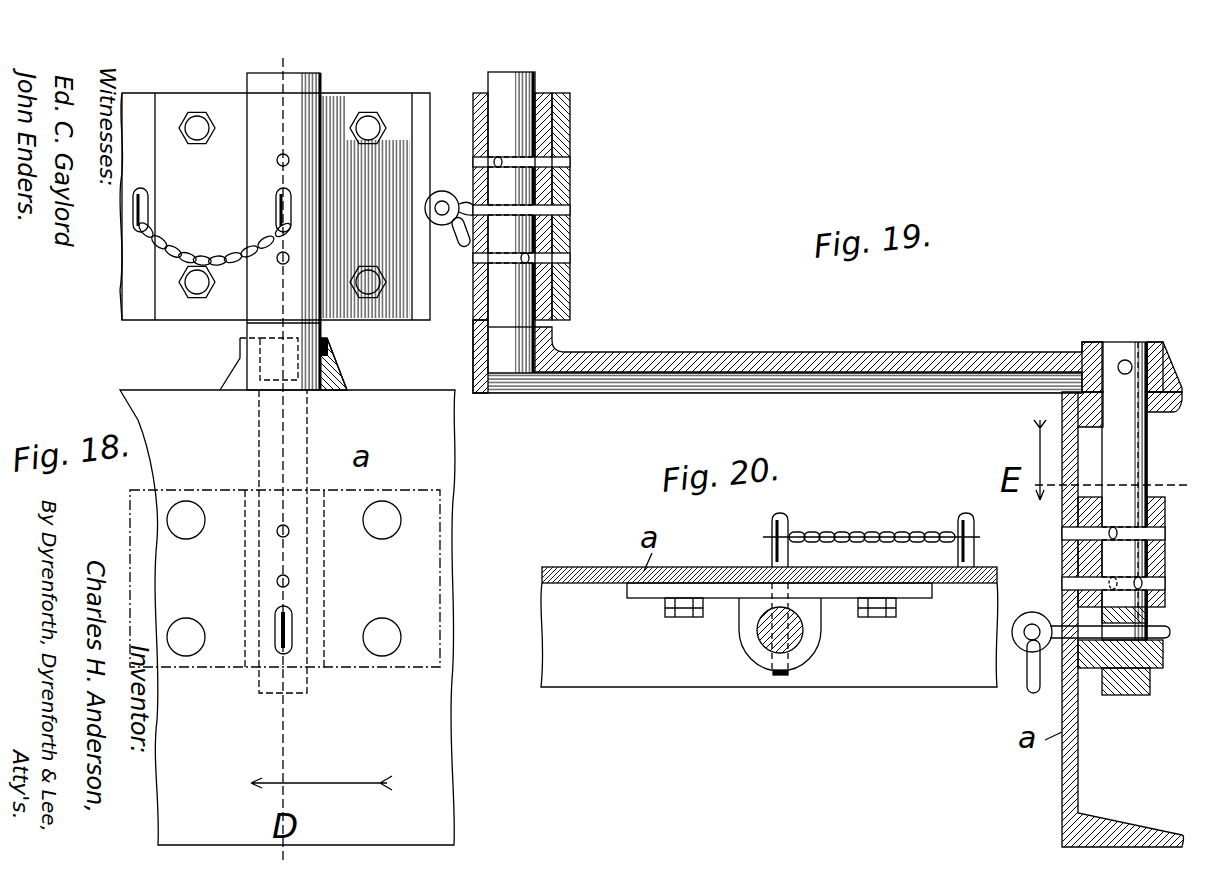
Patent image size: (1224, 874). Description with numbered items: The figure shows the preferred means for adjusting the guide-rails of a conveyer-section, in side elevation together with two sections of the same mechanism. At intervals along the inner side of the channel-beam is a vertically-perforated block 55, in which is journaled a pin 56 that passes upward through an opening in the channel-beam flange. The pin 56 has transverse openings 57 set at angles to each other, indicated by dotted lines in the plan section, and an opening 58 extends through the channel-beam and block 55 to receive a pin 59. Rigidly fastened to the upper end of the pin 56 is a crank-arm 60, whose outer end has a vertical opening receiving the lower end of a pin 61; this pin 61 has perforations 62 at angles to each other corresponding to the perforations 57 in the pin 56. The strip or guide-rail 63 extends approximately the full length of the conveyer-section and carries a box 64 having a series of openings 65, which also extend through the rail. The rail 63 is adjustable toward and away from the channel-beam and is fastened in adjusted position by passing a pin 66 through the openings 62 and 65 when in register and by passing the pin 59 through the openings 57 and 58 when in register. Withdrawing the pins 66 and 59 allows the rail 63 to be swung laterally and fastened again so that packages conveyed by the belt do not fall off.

In FIG. 19, the vertically-perforated block 55 is at (1172, 506).
In FIG. 20, the vertically-perforated block 55 is at (803, 658).
In FIG. 19, the pin 56 is at (1133, 461).
In FIG. 20, the pin 56 is at (757, 635).
In FIG. 19, the transverse opening 57 is at (1107, 613).
In FIG. 20, the transverse opening 57 is at (766, 670).
In FIG. 18, the opening 58 is at (289, 533).
In FIG. 19, the opening 58 is at (1173, 620).
In FIG. 18, the pin 59 is at (292, 624).
In FIG. 19, the pin 59 is at (1123, 696).
In FIG. 20, the pin 59 is at (793, 520).
In FIG. 18, the crank-arm 60 is at (299, 363).
In FIG. 19, the crank-arm 60 is at (872, 352).
In FIG. 19, the pin 61 is at (540, 290).
In FIG. 19, the perforation 62 is at (530, 258).
In FIG. 18, the guide-rail 63 is at (133, 308).
In FIG. 19, the guide-rail 63 is at (570, 136).
In FIG. 19, the box 64 is at (473, 106).
In FIG. 18, the opening 65 is at (289, 160).
In FIG. 19, the opening 65 is at (490, 158).
In FIG. 18, the pin 66 is at (292, 212).
In FIG. 19, the pin 66 is at (425, 209).